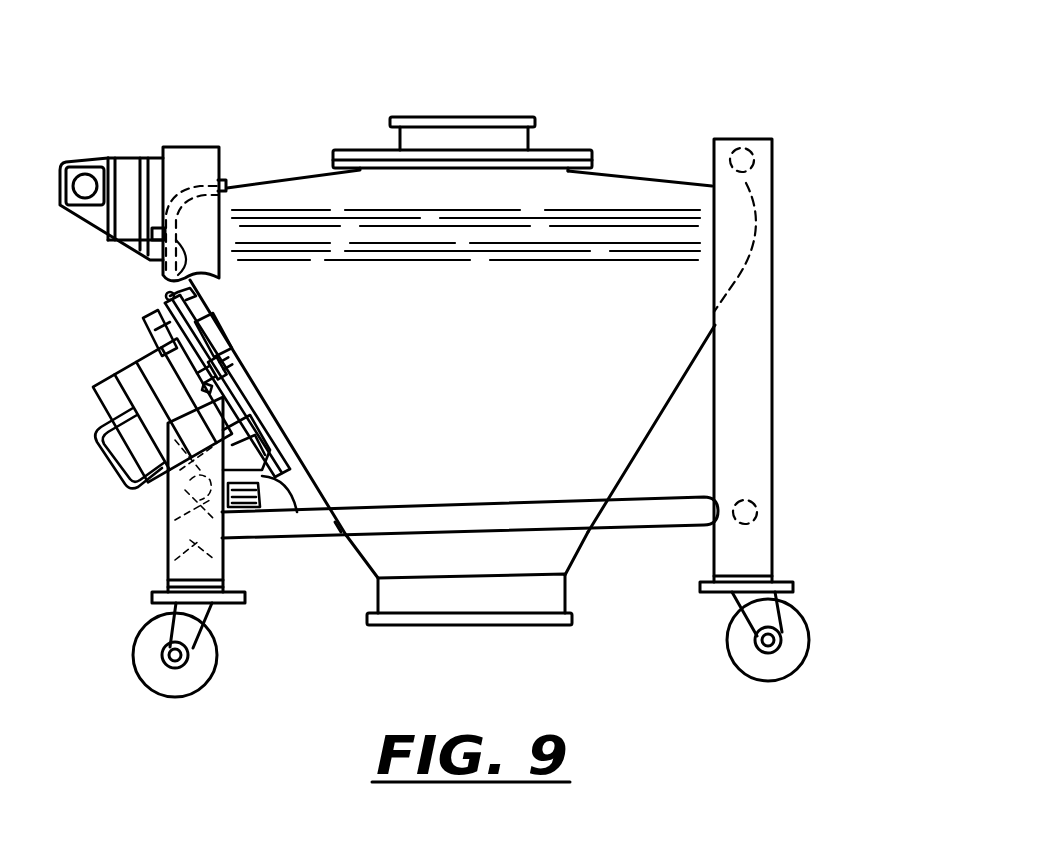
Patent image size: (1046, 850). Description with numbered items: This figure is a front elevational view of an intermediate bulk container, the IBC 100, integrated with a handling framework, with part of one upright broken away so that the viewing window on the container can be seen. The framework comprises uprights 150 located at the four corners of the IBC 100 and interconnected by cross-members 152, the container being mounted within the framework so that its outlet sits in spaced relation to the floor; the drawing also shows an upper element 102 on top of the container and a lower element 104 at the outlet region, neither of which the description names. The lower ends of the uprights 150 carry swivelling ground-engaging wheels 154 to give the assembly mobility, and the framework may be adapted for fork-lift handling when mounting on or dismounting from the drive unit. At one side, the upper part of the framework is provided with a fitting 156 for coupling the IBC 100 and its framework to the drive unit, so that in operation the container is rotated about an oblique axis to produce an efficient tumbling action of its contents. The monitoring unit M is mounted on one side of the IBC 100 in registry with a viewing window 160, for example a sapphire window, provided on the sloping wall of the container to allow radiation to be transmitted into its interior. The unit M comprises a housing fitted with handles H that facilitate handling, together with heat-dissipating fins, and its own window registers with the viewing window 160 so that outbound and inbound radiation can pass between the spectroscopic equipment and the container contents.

The IBC 100 is at (643, 152).
The top cover / inlet flange 102 is at (494, 116).
The bottom outlet 104 is at (503, 624).
The uprights 150 is at (771, 385).
The cross-members 152 is at (675, 524).
The swivelling ground-engaging wheels 154 is at (750, 663).
The fitting 156 is at (138, 160).
The viewing window 160 is at (218, 340).
The monitoring unit M is at (127, 329).
The handles H is at (112, 470).